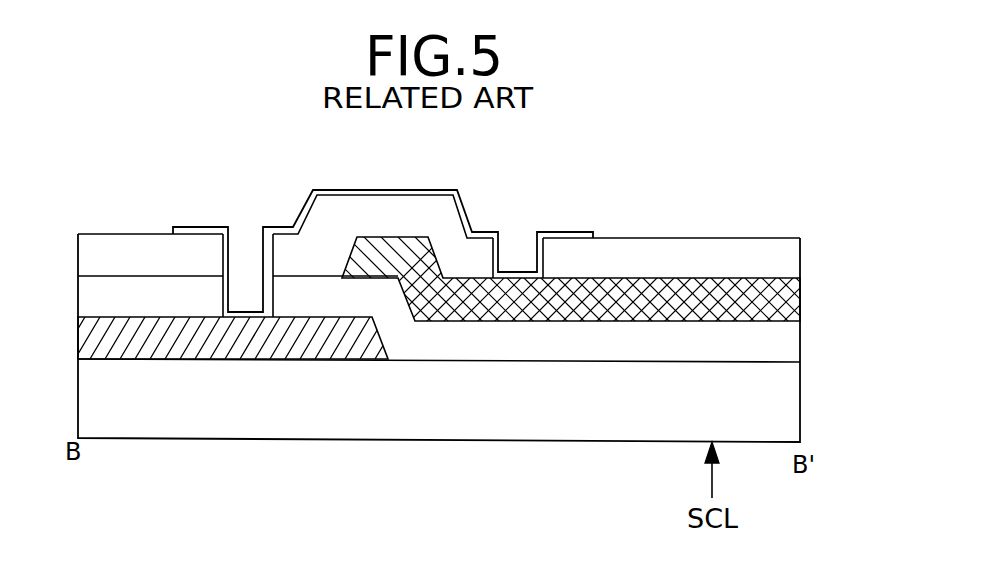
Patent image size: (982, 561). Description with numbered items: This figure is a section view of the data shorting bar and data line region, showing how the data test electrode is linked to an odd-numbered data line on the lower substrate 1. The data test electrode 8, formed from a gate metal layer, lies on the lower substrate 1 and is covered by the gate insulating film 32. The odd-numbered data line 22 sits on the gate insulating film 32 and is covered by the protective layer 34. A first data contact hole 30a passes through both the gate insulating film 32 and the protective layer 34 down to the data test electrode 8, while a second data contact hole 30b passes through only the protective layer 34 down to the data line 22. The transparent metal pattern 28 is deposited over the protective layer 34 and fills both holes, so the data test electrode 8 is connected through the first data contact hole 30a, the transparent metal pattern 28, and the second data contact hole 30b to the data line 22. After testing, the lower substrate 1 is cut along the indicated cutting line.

The lower substrate 1 is at (800, 413).
The data test electrode 8 is at (78, 338).
The gate insulating film 32 is at (800, 339).
The data line 22 is at (800, 304).
The protective layer 34 is at (800, 263).
The first data contact hole 30a is at (245, 238).
The second data contact hole 30b is at (520, 248).
The transparent metal pattern 28 is at (573, 232).